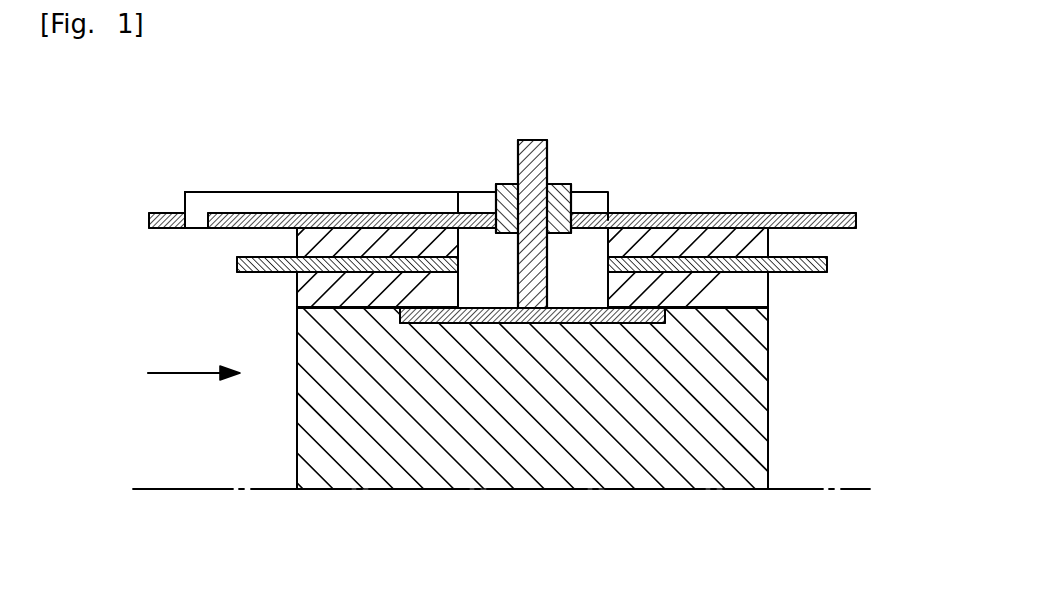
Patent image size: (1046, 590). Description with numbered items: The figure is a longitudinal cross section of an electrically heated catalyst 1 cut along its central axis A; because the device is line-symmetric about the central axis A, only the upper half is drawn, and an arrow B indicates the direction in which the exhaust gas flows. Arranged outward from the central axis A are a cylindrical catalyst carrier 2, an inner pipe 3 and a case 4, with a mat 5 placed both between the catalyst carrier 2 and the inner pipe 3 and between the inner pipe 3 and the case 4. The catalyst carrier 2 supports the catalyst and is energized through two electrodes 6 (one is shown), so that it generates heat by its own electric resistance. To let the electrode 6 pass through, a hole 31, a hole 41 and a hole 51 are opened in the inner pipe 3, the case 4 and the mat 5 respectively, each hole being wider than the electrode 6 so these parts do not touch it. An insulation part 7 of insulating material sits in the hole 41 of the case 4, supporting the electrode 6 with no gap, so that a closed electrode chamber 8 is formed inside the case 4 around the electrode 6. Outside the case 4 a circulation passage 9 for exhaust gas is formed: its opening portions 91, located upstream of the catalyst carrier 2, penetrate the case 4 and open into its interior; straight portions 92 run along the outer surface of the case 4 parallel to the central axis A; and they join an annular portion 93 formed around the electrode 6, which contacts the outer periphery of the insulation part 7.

The electrically heated catalyst 1 is at (710, 129).
The catalyst carrier 2 is at (758, 420).
The inner pipe 3 is at (237, 268).
The hole 31 is at (609, 236).
The case 4 is at (790, 212).
The hole 41 is at (607, 262).
The mat 5 is at (760, 242).
The hole 51 is at (606, 214).
The electrode 6 is at (533, 139).
The insulation part 7 is at (562, 181).
The electrode chamber 8 is at (483, 279).
The circulation passage 9 is at (358, 198).
The opening portion 91 is at (200, 222).
The straight portion 92 is at (244, 200).
The annular portion 93 is at (480, 197).
The central axis A is at (783, 488).
The arrow B is at (185, 373).